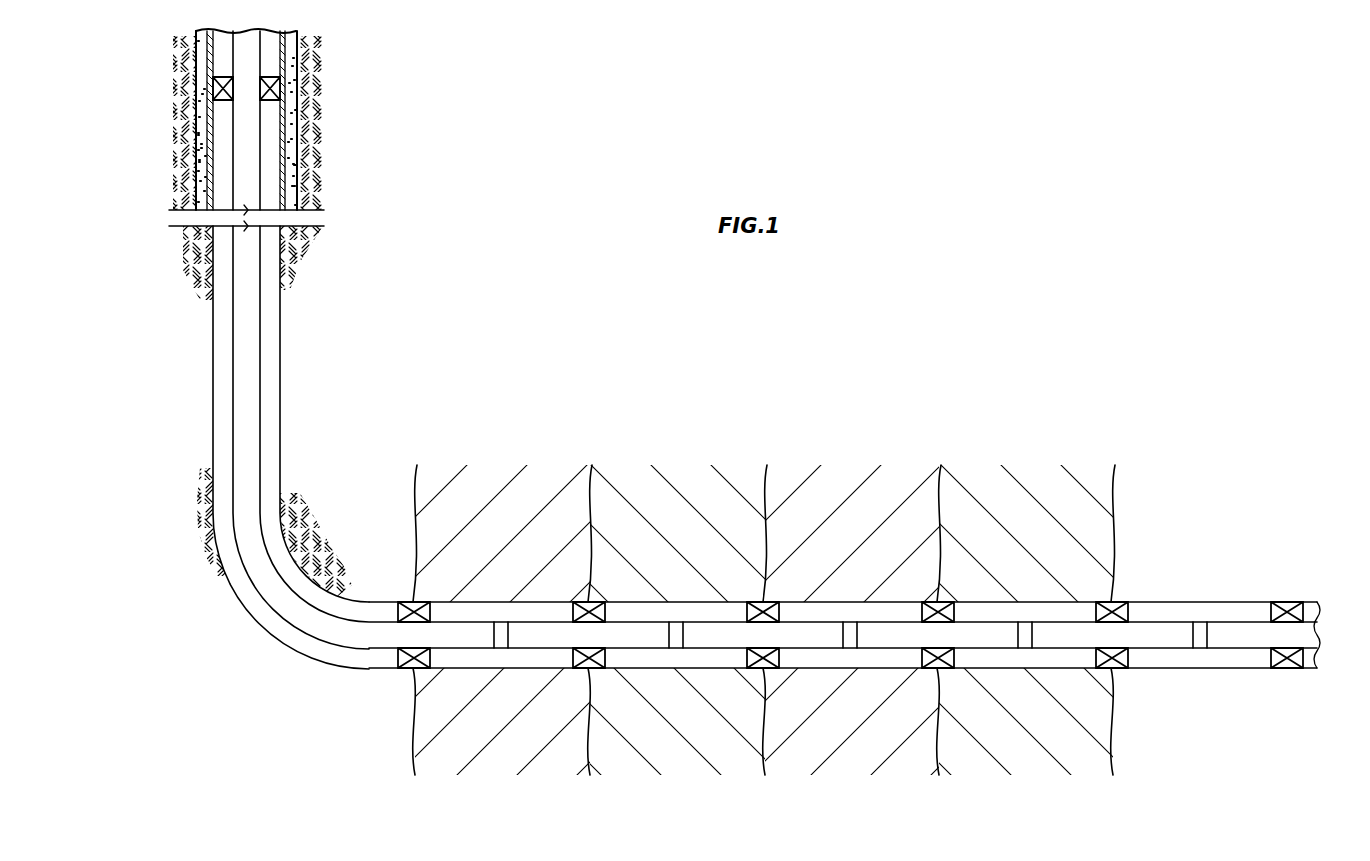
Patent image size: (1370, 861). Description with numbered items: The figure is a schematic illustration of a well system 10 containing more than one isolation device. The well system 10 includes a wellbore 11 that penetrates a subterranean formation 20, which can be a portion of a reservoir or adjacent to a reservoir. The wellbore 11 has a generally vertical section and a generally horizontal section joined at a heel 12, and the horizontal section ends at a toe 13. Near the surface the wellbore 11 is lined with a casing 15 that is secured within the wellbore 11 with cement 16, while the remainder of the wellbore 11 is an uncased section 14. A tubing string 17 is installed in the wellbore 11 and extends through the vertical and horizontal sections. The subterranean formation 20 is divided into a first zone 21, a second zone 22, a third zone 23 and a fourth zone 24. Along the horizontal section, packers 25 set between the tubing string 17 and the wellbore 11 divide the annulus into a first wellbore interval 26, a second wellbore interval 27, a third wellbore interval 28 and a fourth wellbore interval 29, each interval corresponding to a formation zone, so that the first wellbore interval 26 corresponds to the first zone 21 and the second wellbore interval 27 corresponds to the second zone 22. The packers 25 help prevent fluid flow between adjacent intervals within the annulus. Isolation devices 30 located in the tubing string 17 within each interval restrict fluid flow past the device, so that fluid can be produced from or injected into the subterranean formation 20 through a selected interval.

The well system 10 is at (486, 258).
The wellbore 11 is at (281, 357).
The heel 12 is at (260, 647).
The toe 13 is at (1313, 596).
The uncased section 14 is at (281, 313).
The casing 15 is at (290, 158).
The cement 16 is at (292, 120).
The tubing string 17 is at (261, 382).
The subterranean formation 20 is at (739, 411).
The first zone 21 is at (522, 517).
The second zone 22 is at (696, 517).
The third zone 23 is at (859, 517).
The fourth zone 24 is at (1057, 516).
The packer 25 is at (282, 86).
The first wellbore interval 26 is at (434, 775).
The second wellbore interval 27 is at (609, 775).
The third wellbore interval 28 is at (776, 777).
The fourth wellbore interval 29 is at (956, 779).
The isolation device 30 is at (501, 622).